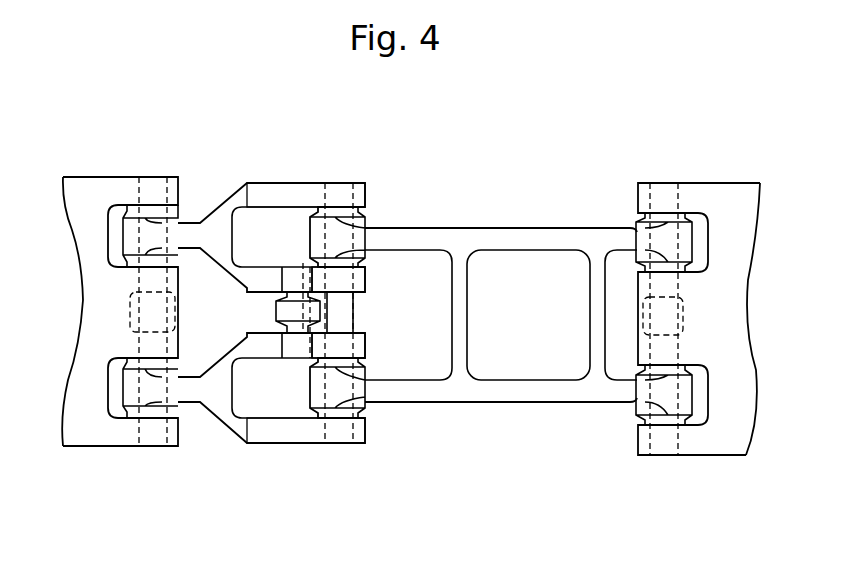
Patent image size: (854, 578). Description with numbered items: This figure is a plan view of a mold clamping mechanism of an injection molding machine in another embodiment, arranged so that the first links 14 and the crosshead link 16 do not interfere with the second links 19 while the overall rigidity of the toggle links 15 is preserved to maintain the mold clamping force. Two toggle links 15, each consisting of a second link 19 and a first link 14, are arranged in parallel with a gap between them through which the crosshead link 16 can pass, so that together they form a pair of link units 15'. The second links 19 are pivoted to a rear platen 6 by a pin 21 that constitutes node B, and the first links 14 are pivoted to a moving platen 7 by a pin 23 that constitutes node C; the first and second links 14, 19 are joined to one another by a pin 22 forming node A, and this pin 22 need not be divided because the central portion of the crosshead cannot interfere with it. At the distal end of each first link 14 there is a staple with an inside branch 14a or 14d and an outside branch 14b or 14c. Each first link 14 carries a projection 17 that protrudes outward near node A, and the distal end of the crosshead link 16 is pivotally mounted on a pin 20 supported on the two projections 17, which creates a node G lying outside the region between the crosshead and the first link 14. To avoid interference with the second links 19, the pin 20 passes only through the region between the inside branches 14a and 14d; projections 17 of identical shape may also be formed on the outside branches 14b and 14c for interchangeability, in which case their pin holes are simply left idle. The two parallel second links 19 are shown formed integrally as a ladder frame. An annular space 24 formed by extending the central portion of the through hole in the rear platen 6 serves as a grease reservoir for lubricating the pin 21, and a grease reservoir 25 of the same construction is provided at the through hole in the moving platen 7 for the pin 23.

The rear platen 6 is at (100, 190).
The moving platen 7 is at (722, 435).
The first link 14 is at (222, 192).
The inside branch of staple 14a is at (366, 273).
The outside branch of staple 14b is at (368, 190).
The outside branch of staple 14c is at (368, 440).
The inside branch of staple 14d is at (366, 352).
The toggle link 15 is at (501, 322).
The link unit 15' is at (400, 470).
The crosshead link 16 is at (275, 312).
The projection 17 is at (289, 283).
The second link 19 is at (488, 228).
The pin 20 is at (302, 265).
The pin 21 is at (146, 441).
The pin 22 is at (361, 315).
The pin 23 is at (660, 441).
The annular space 24 is at (128, 305).
The grease reservoir 25 is at (688, 313).
The node A is at (344, 181).
The node B is at (152, 176).
The node C is at (657, 183).
The node G is at (293, 262).